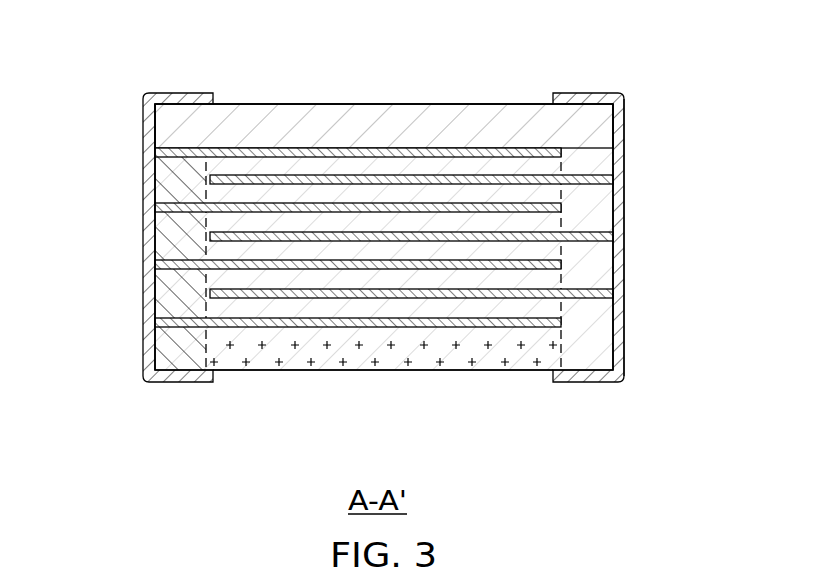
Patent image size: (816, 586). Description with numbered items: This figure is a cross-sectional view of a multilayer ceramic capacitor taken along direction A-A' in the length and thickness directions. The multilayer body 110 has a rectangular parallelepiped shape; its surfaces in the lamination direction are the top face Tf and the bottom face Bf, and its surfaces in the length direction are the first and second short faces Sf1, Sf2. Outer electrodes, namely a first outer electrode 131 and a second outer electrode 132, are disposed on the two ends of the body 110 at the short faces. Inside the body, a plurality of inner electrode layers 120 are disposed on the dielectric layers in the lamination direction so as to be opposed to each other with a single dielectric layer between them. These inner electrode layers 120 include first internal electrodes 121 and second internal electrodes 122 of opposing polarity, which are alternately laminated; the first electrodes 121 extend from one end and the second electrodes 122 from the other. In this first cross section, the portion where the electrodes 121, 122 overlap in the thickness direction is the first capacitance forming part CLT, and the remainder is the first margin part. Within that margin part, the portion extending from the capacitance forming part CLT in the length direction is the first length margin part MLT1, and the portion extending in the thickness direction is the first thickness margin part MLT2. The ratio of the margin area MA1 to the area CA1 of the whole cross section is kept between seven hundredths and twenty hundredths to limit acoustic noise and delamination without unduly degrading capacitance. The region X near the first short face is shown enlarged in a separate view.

The multilayer body 110 is at (373, 103).
The inner electrode layers 120 is at (467, 214).
The first internal electrodes 121 is at (537, 146).
The second internal electrodes 122 is at (550, 176).
The first outer electrode 131 is at (182, 93).
The second outer electrode 132 is at (582, 93).
The area of the first cross section CA1 is at (268, 122).
The top face Tf is at (501, 103).
The bottom face Bf is at (437, 362).
The region X is at (192, 187).
The first length margin part MLT1 is at (170, 240).
The first thickness margin part MLT2 is at (362, 346).
The area of the first margin part MA1 is at (593, 339).
The first short face Sf1 is at (160, 288).
The second short face Sf2 is at (613, 327).
The first capacitance forming part CLT is at (631, 266).